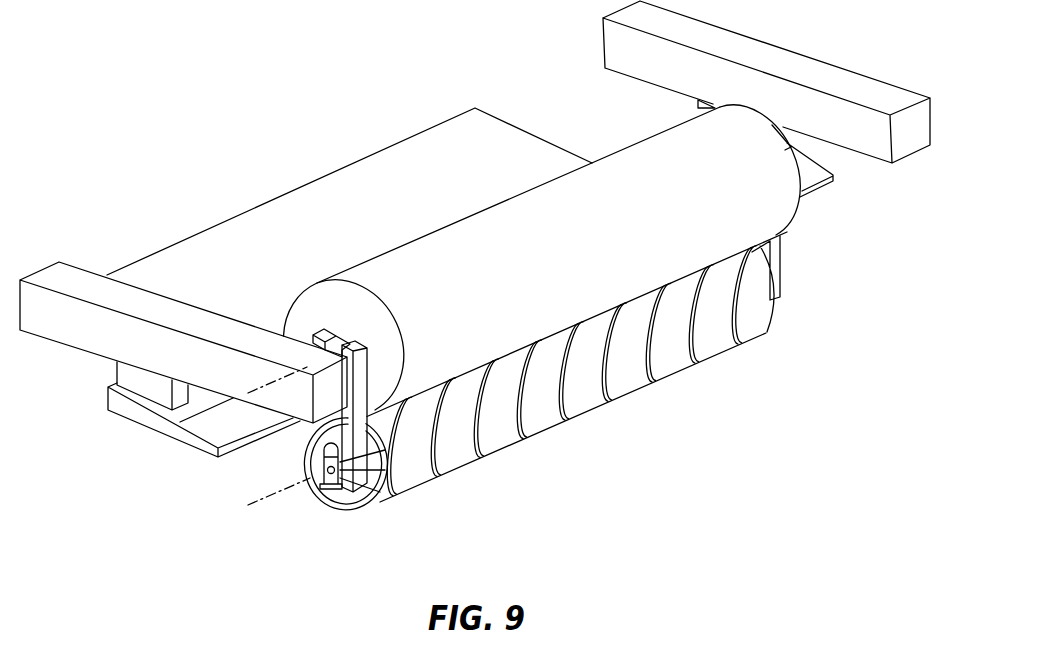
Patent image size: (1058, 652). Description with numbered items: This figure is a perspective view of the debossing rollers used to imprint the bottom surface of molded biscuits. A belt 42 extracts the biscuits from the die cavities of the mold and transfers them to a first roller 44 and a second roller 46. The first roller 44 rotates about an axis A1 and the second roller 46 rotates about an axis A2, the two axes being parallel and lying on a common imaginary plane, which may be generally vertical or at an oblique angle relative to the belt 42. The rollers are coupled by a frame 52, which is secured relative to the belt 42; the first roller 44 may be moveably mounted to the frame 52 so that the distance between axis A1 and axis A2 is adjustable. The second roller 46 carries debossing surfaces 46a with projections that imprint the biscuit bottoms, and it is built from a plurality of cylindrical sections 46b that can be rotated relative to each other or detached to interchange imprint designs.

The belt 42 is at (312, 202).
The first roller 44 is at (800, 213).
The second roller 46 is at (576, 373).
The debossing surfaces 46a is at (666, 348).
The cylindrical sections 46b is at (494, 440).
The frame 52 is at (95, 335).
The axis A1 is at (257, 388).
The axis A2 is at (293, 483).